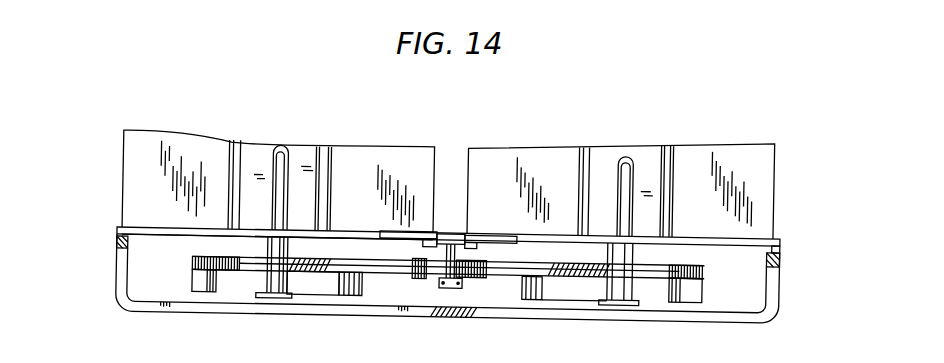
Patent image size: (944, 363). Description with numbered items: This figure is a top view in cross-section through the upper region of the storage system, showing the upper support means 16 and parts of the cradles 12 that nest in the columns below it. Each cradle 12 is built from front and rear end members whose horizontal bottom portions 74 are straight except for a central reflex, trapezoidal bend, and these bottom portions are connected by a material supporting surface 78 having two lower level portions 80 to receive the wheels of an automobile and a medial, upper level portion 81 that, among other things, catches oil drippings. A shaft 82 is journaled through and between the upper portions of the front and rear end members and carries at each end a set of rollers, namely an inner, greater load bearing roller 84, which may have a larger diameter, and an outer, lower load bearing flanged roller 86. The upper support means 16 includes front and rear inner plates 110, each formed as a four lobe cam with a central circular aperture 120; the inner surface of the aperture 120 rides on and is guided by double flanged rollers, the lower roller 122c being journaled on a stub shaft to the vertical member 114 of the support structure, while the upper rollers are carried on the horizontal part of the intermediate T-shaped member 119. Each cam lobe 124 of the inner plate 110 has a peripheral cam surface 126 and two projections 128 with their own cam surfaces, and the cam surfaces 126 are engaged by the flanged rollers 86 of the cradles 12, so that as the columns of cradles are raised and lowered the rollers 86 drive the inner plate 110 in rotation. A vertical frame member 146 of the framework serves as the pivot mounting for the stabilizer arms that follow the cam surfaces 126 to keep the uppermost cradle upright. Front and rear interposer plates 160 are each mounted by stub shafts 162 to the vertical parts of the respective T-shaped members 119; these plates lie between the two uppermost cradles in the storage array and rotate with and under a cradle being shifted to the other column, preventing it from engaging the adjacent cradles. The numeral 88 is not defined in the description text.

The cradle 12 is at (133, 227).
The upper support means 16 is at (209, 333).
The horizontal bottom portion 74 is at (168, 225).
The material supporting surface 78 is at (284, 127).
The lower level portion 80 is at (183, 139).
The medial upper level portion 81 is at (262, 142).
The shaft 82 is at (287, 157).
The inner roller 84 is at (273, 249).
The outer flanged roller 86 is at (273, 277).
The carriage post 88 is at (287, 297).
The inner plate 110 is at (313, 286).
The vertical member 114 is at (475, 310).
The intermediate T-shaped member 119 is at (440, 277).
The central circular aperture 120 is at (345, 286).
The lower roller 122c is at (490, 273).
The cam lobe 124 is at (222, 232).
The peripheral cam surface 126 is at (193, 261).
The projection 128 is at (226, 266).
The vertical frame member 146 is at (122, 249).
The interposer plate 160 is at (447, 227).
The stub shaft 162 is at (448, 278).